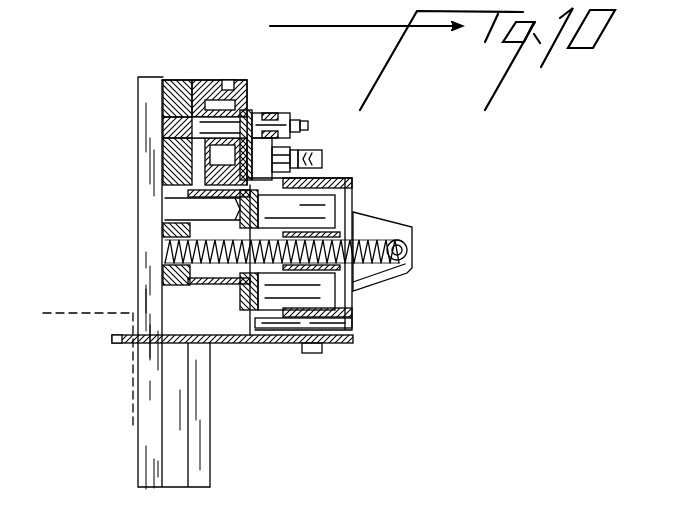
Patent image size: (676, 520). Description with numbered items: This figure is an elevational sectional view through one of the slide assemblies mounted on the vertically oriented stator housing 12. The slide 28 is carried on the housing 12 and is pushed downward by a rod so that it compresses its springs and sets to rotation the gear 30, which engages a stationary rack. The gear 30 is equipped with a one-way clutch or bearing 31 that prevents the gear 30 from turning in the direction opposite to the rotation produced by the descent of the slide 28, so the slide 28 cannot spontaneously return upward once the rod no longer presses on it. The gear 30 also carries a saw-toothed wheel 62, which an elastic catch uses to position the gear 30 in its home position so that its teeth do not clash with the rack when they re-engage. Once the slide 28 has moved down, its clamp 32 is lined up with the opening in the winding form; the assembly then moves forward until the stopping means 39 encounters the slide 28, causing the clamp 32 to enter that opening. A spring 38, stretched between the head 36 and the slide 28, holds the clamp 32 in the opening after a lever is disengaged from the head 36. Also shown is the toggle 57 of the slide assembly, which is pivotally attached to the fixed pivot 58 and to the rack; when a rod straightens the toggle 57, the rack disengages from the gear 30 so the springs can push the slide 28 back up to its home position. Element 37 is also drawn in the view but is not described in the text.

The stator housing 12 is at (97, 310).
The slide 28 is at (172, 100).
The gear 30 is at (232, 79).
The one-way clutch or bearing 31 is at (195, 79).
The clamp 32 is at (218, 343).
The head 36 is at (406, 270).
The cylinder tube 37 is at (330, 182).
The spring 38 is at (357, 243).
The stopping means 39 is at (248, 322).
The toggle 57 is at (258, 160).
The fixed pivot 58 is at (293, 146).
The saw-toothed wheel 62 is at (245, 97).